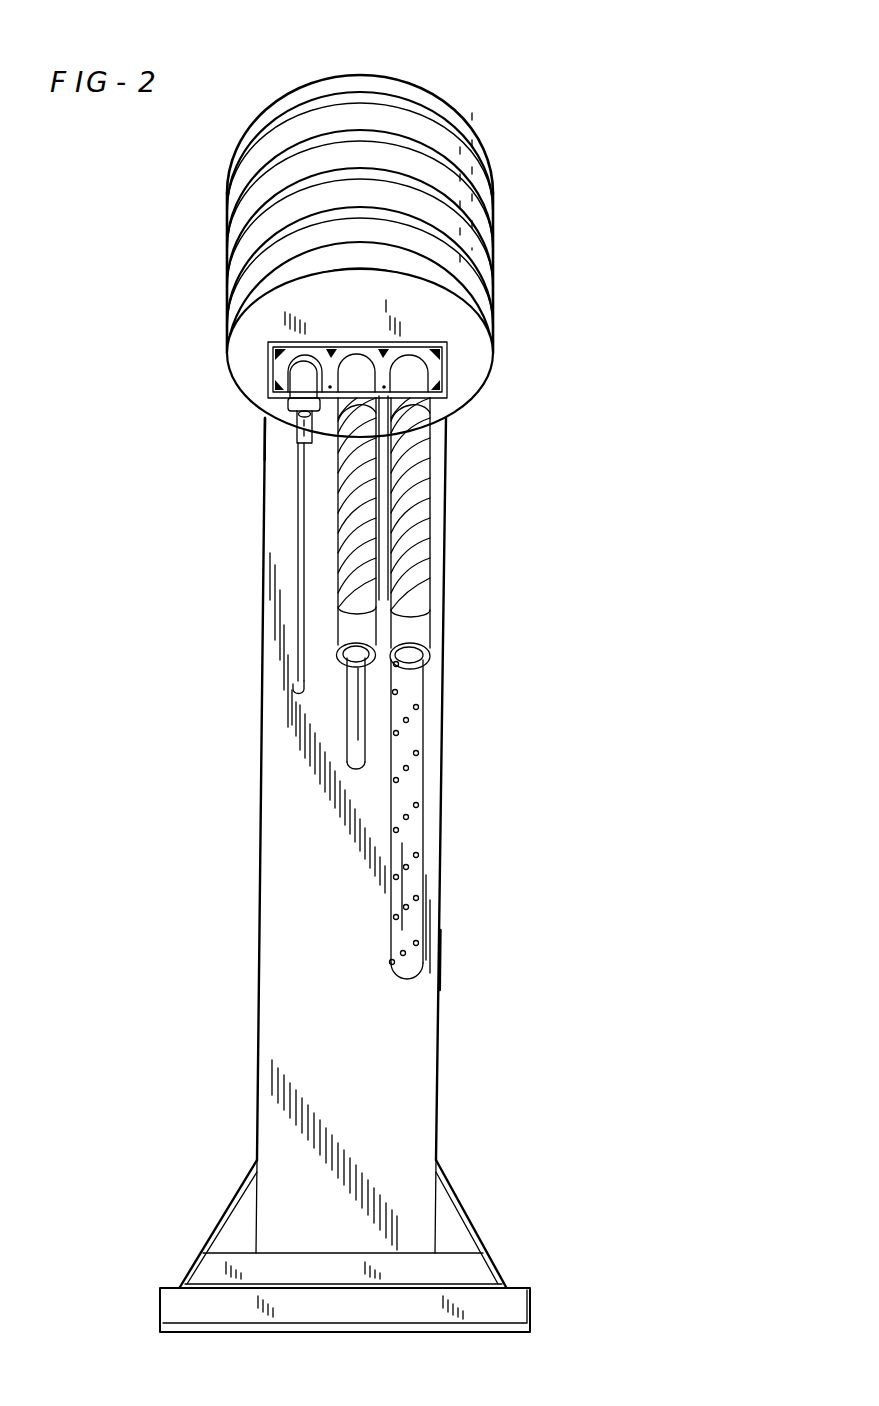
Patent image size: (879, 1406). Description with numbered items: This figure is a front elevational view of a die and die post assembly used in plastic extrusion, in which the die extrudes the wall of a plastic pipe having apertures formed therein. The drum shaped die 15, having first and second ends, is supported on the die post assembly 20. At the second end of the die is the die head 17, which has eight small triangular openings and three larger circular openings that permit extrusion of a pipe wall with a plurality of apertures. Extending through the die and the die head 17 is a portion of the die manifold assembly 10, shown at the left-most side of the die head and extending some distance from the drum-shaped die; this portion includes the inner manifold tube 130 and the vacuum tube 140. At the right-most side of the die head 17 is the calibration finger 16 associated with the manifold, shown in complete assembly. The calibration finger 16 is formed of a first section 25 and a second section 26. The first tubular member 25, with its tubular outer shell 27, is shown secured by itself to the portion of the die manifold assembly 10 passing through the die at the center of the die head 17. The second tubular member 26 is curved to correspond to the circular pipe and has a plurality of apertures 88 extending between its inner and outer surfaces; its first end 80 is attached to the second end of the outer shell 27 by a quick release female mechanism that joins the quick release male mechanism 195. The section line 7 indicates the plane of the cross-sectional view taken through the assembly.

The section line 7- 7 is at (413, 340).
The die manifold assembly 10 is at (290, 406).
The die 15 is at (497, 182).
The calibration finger 16 is at (452, 514).
The die head 17 is at (393, 352).
The die post assembly 20 is at (441, 959).
The first section 25 is at (412, 460).
The second section 26 is at (423, 827).
The tubular outer shell 27 is at (345, 564).
The first end 80 is at (412, 672).
The apertures 88 is at (421, 958).
The inner manifold tube 130 is at (297, 643).
The vacuum tube 140 is at (267, 433).
The quick release male mechanism 195 is at (341, 661).